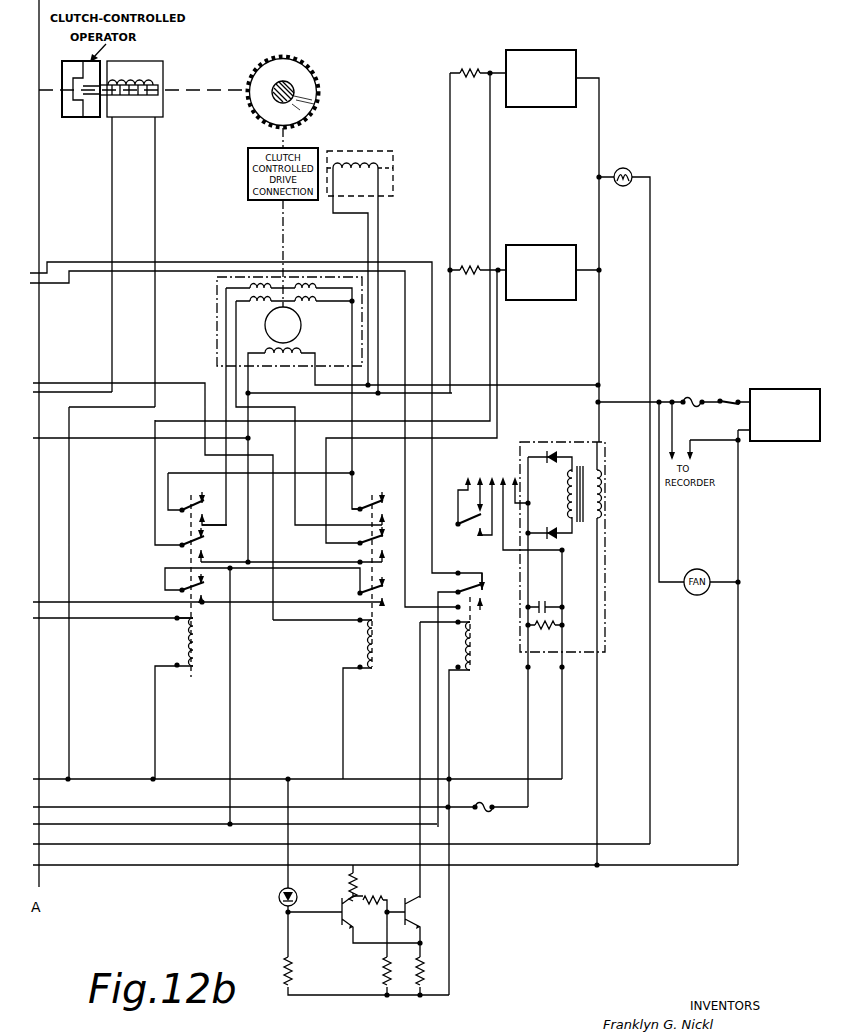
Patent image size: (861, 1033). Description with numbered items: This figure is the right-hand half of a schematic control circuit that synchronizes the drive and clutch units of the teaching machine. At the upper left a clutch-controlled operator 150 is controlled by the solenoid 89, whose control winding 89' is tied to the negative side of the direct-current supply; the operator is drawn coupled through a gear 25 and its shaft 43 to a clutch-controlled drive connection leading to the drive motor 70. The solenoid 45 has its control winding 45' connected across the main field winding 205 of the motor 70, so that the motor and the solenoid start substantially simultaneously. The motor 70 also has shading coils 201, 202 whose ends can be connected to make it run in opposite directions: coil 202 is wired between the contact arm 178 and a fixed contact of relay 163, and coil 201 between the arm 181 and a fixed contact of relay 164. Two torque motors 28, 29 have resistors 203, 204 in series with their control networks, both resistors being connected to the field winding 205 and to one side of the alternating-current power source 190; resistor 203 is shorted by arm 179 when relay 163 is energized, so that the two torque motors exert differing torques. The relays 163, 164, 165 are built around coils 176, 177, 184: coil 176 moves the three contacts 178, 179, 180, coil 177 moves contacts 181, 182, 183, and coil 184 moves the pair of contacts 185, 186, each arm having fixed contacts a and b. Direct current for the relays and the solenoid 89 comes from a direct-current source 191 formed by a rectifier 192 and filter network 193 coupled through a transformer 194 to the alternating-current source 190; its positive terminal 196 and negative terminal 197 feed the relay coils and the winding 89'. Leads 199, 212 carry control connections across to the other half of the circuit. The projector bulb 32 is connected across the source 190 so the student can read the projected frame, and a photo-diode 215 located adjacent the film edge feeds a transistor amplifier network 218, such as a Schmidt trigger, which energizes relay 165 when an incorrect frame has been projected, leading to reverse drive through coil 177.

The gear 25 is at (312, 84).
The torque motor 28 is at (570, 52).
The torque motor 29 is at (536, 248).
The projector bulb 32 is at (629, 170).
The shaft 43 is at (296, 95).
The solenoid 45 is at (376, 187).
The control winding 45' is at (365, 261).
The drive motor 70 is at (217, 352).
The solenoid 89 is at (151, 223).
The control winding 89' is at (149, 80).
The clutch-controlled operator 150 is at (78, 117).
The relay 163 is at (273, 584).
The relay 164 is at (365, 597).
The relay 165 is at (465, 709).
The relay coil 176 is at (186, 640).
The relay coil 177 is at (366, 640).
The movable contact 178 is at (190, 506).
The movable contact 179 is at (188, 540).
The movable contact 180 is at (184, 590).
The movable contact 181 is at (364, 504).
The movable contact 182 is at (364, 542).
The movable contact 183 is at (364, 592).
The relay coil 184 is at (473, 638).
The movable contact 185 is at (460, 526).
The movable contact 186 is at (458, 592).
The A.-C. power source 190 is at (792, 372).
The D.-C. source 191 is at (605, 652).
The rectifier 192 is at (548, 629).
The filter network 193 is at (554, 628).
The transformer 194 is at (582, 462).
The positive terminal 196 is at (528, 672).
The negative terminal 197 is at (562, 668).
The lead 199 is at (59, 262).
The shading coil 201 is at (255, 302).
The shading coil 202 is at (262, 285).
The resistor 203 is at (484, 55).
The resistor 204 is at (470, 266).
The main field winding 205 is at (300, 352).
The lead 212 is at (69, 283).
The photo-diode 215 is at (279, 897).
The transistor amplifier network 218 is at (366, 931).